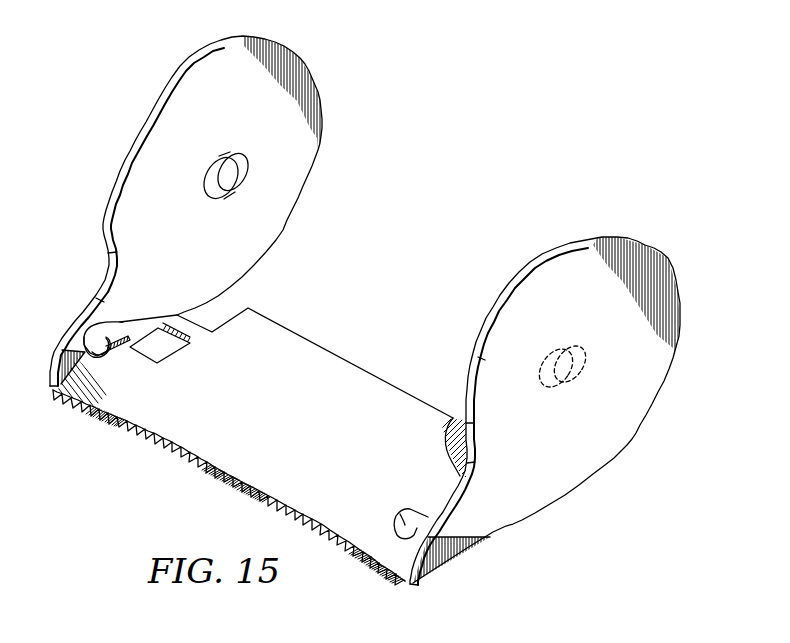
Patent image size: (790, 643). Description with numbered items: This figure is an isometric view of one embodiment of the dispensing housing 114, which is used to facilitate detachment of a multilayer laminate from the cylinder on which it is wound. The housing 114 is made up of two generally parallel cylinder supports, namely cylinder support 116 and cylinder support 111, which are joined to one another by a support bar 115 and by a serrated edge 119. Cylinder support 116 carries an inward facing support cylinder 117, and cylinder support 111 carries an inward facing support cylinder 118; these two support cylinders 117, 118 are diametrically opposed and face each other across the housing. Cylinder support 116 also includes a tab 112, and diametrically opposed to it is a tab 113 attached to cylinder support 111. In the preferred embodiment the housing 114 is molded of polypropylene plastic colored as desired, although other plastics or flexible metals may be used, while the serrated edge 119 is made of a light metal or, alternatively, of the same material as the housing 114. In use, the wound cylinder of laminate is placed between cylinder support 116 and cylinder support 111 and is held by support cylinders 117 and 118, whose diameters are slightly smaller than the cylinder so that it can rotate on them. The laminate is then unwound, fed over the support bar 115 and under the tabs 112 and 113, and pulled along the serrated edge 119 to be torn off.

The housing 114 is at (93, 62).
The cylinder support 116 is at (253, 116).
The inward facing support cylinder 117 is at (204, 173).
The tab 112 is at (123, 322).
The support bar 115 is at (306, 420).
The serrated edge 119 is at (151, 440).
The cylinder support 111 is at (616, 313).
The inward facing support cylinder 118 is at (547, 368).
The tab 113 is at (405, 514).